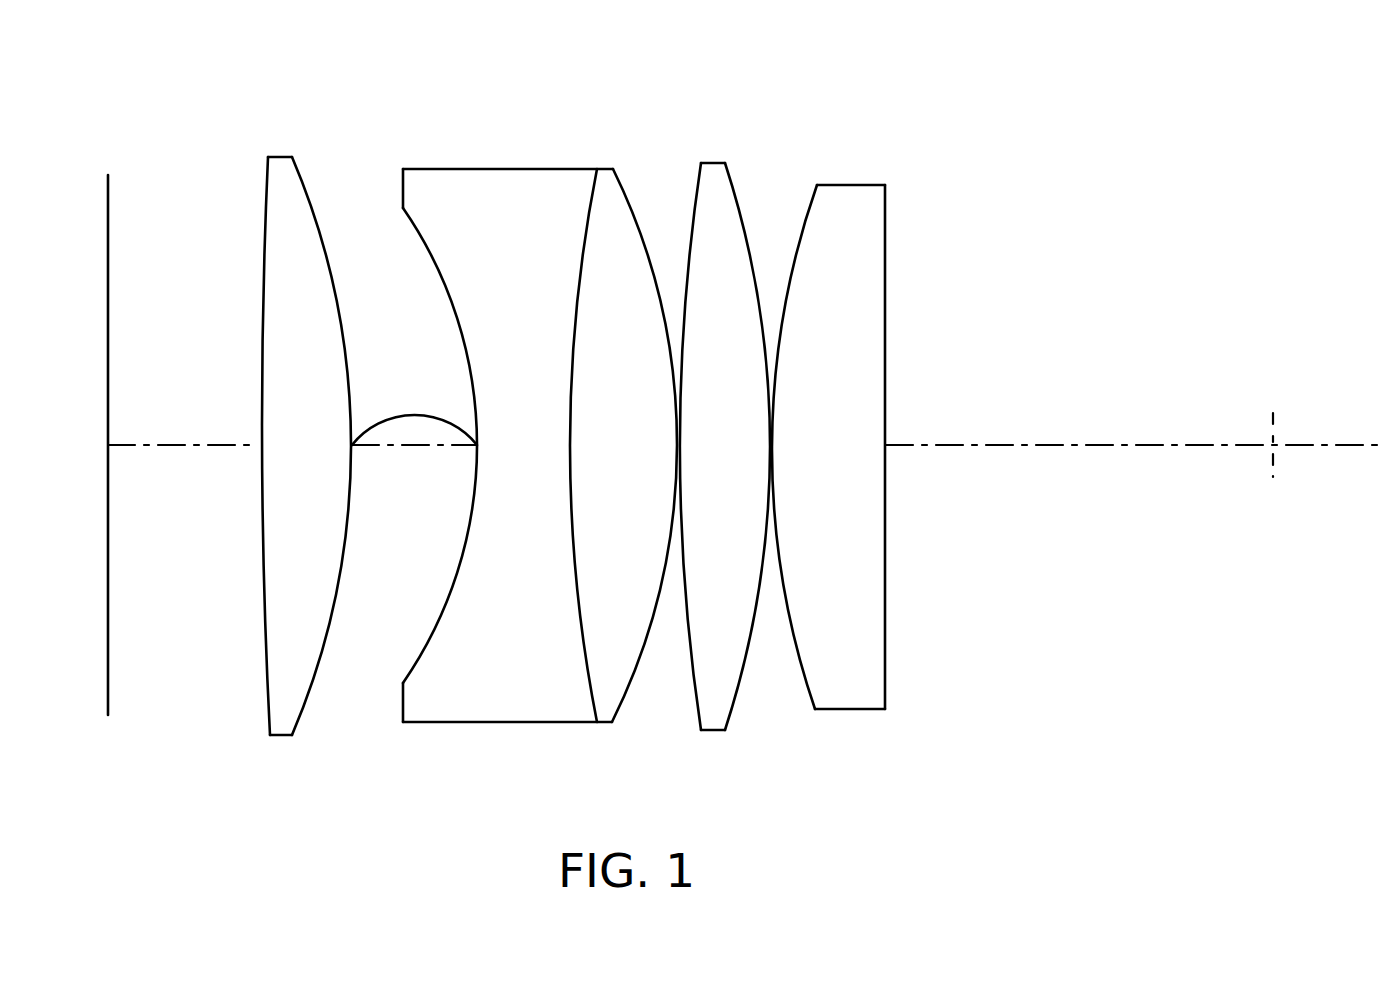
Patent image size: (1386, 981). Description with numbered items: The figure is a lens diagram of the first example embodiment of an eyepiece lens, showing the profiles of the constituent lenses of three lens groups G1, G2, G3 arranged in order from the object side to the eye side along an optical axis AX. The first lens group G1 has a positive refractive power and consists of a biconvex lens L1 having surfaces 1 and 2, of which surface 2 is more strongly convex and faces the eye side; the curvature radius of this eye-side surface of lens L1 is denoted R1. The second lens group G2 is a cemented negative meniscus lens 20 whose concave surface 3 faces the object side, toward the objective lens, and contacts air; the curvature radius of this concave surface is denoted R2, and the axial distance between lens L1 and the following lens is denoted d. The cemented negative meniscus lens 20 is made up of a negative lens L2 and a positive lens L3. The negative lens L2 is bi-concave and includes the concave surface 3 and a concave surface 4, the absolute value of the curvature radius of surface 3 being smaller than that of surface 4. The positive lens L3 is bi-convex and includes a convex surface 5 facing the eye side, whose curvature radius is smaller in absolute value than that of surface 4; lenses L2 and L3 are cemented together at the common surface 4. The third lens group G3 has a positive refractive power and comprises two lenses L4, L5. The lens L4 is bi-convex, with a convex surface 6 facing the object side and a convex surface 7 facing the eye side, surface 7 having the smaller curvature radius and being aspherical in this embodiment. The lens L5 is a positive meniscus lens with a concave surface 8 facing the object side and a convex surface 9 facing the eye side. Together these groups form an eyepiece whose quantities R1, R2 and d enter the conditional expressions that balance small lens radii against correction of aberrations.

The surface 1 is at (262, 572).
The surface 2 is at (343, 577).
The concave surface 3 is at (463, 556).
The concave surface 4 is at (578, 578).
The convex surface 5 is at (644, 448).
The convex surface 6 is at (683, 600).
The convex surface 7 is at (745, 653).
The concave surface 8 is at (795, 632).
The convex surface 9 is at (886, 560).
The cemented negative meniscus lens 20 is at (531, 364).
The biconvex lens L1 is at (301, 397).
The negative lens L2 is at (510, 390).
The positive lens L3 is at (646, 391).
The lens L4 is at (726, 421).
The lens L5 is at (874, 421).
The first lens group G1 is at (301, 435).
The second lens group G2 is at (531, 405).
The third lens group G3 is at (821, 457).
The curvature radius R1 is at (304, 446).
The curvature radius R2 is at (426, 445).
The axial distance d is at (414, 411).
The optical axis AX is at (1052, 446).